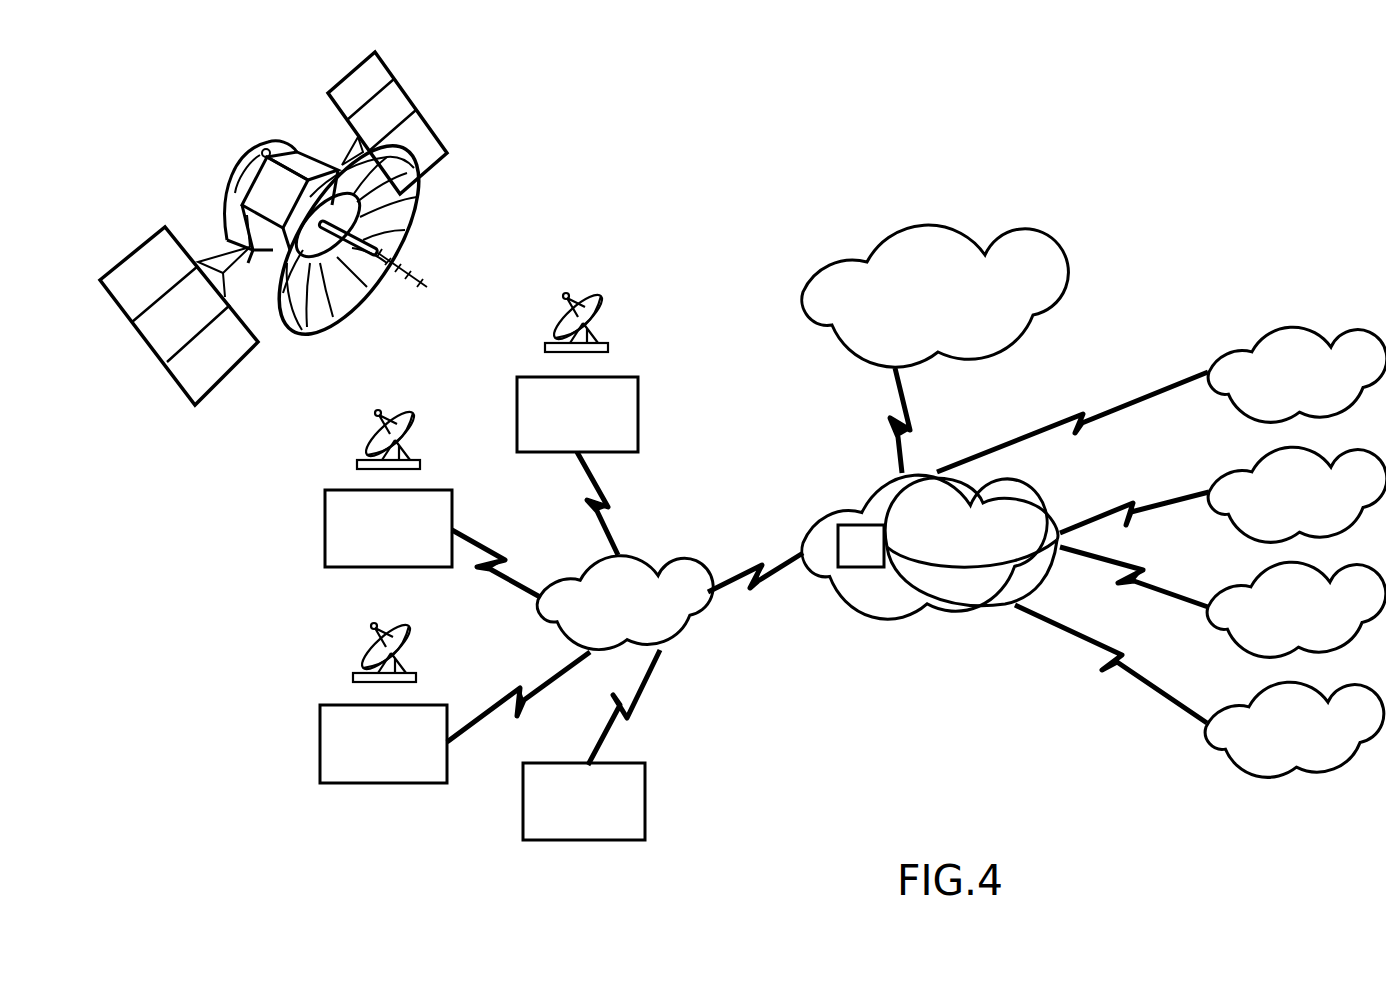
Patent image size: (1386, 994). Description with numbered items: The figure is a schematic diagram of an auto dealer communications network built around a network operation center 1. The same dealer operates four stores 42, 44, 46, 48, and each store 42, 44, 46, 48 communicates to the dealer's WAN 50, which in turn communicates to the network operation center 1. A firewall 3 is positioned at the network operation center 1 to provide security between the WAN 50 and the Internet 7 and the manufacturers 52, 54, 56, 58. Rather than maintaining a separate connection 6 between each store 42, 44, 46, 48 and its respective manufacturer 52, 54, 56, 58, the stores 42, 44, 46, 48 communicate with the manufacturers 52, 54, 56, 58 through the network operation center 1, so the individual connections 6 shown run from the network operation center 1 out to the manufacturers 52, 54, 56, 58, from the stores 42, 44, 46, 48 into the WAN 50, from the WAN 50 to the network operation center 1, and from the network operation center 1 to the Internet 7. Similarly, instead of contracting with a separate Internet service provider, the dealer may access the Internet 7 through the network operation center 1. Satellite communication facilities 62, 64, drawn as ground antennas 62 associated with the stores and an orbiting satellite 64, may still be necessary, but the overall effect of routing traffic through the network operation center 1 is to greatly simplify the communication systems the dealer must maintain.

The network operation center 1 is at (943, 546).
The firewall 3 is at (852, 562).
The connection 6 is at (828, 551).
The Internet 7 is at (920, 313).
The store 42 is at (564, 431).
The store 44 is at (377, 543).
The store 46 is at (371, 759).
The store 48 is at (571, 818).
The WAN 50 is at (607, 621).
The manufacturer 52 is at (1279, 396).
The manufacturer 54 is at (1278, 513).
The manufacturer 56 is at (1277, 629).
The manufacturer 58 is at (1275, 753).
The satellite communication facility 62 is at (557, 320).
The satellite communication facility 64 is at (418, 200).